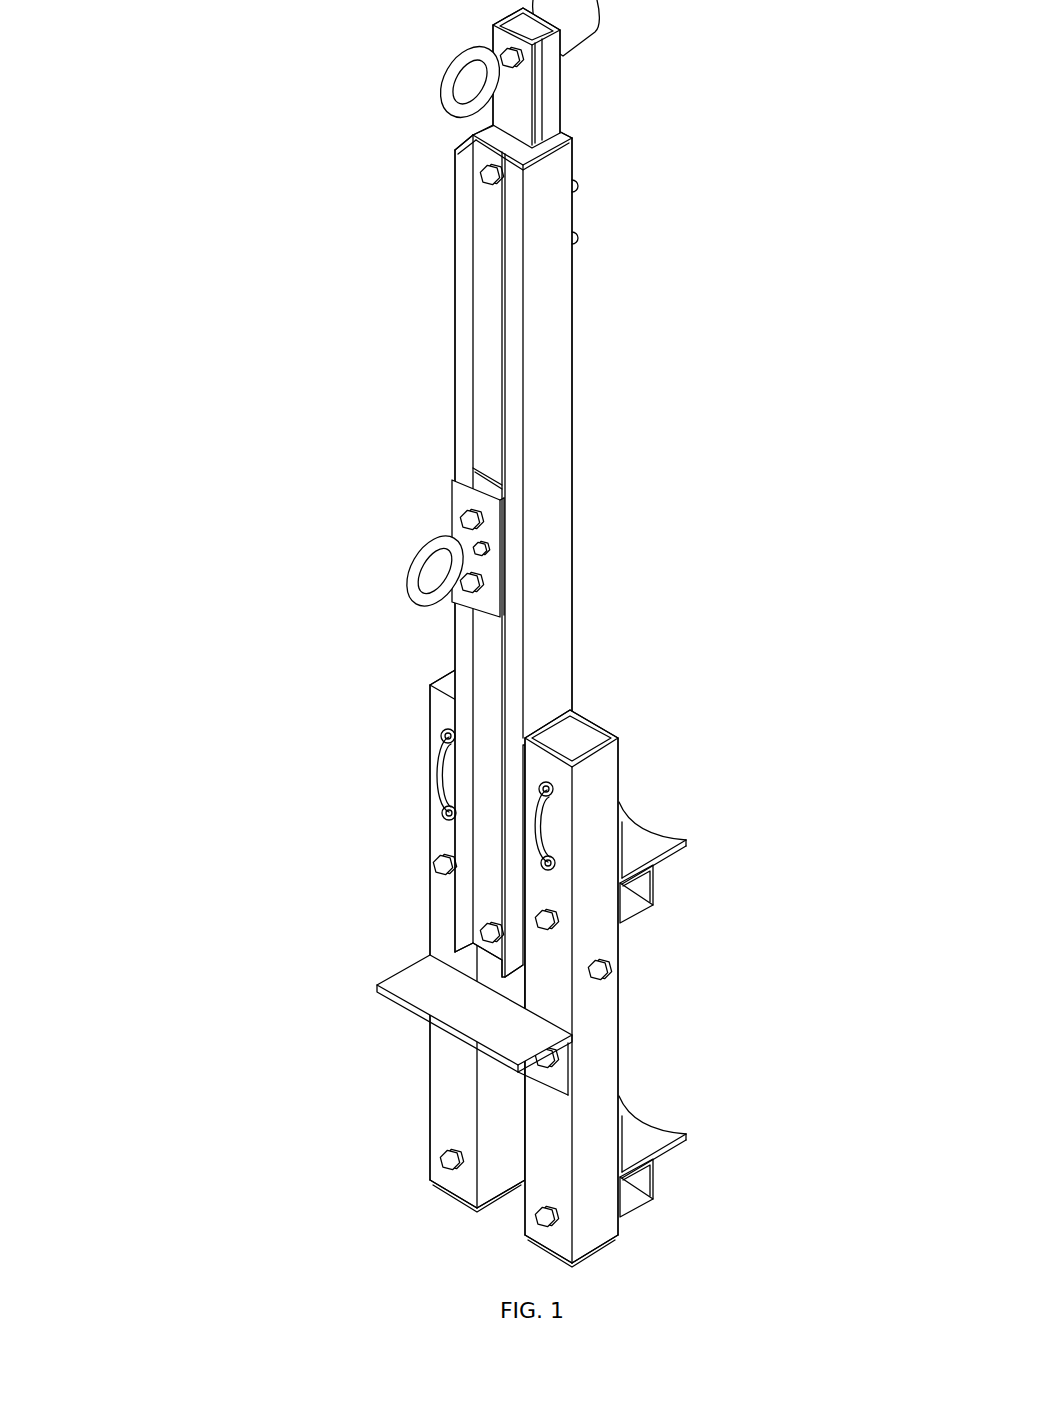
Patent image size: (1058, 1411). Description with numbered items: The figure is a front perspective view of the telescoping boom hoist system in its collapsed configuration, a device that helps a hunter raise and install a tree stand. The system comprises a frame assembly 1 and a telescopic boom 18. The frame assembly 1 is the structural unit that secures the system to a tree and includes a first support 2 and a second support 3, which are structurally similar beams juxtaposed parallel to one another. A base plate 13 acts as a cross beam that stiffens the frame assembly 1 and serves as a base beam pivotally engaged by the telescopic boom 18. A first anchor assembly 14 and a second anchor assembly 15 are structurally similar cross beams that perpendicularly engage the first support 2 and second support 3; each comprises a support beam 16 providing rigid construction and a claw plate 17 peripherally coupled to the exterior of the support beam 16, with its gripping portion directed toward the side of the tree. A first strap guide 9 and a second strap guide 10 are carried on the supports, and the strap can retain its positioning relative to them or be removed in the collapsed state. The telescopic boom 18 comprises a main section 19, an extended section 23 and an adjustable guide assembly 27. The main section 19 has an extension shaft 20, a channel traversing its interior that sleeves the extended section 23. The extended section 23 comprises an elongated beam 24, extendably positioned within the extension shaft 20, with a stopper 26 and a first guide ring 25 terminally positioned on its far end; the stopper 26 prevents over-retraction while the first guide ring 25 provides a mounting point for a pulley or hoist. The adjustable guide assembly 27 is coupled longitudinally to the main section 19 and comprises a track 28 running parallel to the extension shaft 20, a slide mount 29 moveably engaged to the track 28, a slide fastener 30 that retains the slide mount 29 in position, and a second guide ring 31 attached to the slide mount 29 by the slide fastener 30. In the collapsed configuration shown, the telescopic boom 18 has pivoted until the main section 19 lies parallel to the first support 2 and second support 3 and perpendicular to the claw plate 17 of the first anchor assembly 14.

The frame assembly 1 is at (672, 1008).
The first support 2 is at (602, 782).
The second support 3 is at (445, 1072).
The first strap guide 9 is at (548, 817).
The second strap guide 10 is at (438, 756).
The base plate 13 is at (413, 980).
The first anchor assembly 14 is at (738, 1012).
The second anchor assembly 15 is at (710, 1152).
The support beam 16 is at (652, 913).
The claw plate 17 is at (636, 823).
The telescopic boom 18 is at (388, 686).
The main section 19 is at (552, 430).
The extension shaft 20 is at (486, 134).
The extended section 23 is at (547, 74).
The elongated beam 24 is at (552, 103).
The first guide ring 25 is at (448, 52).
The stopper 26 is at (600, 15).
The adjustable guide assembly 27 is at (388, 543).
The track 28 is at (457, 330).
The slide mount 29 is at (452, 482).
The slide fastener 30 is at (488, 549).
The second guide ring 31 is at (410, 572).